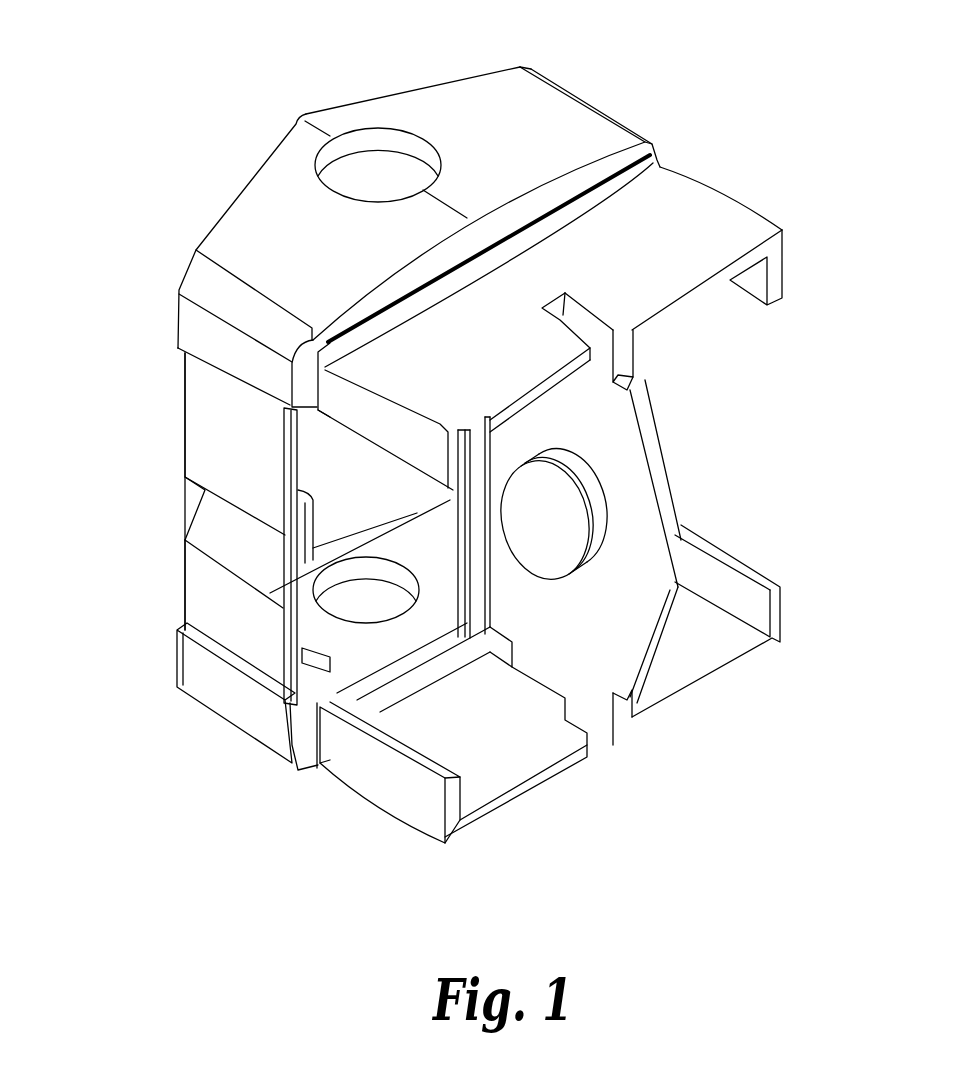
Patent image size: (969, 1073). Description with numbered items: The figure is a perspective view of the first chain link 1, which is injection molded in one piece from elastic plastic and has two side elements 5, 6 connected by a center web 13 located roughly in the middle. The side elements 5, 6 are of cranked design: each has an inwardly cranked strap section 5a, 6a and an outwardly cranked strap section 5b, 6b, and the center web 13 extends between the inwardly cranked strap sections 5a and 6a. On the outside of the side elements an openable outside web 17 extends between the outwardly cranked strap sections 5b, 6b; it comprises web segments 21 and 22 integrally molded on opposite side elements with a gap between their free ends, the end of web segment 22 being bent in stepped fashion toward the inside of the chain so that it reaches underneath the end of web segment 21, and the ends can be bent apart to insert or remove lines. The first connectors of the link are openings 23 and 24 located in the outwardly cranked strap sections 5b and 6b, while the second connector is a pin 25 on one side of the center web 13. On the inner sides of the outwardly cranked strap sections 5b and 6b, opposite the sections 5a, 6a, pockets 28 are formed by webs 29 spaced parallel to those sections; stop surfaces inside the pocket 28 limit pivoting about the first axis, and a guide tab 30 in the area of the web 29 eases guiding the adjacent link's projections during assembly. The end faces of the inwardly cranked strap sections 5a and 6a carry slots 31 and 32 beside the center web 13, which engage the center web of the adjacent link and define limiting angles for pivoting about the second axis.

The chain link 1 is at (765, 177).
The side element 5 is at (660, 167).
The inwardly cranked strap section 5a is at (723, 225).
The outwardly cranked strap section 5b is at (525, 123).
The side element 6 is at (305, 772).
The inwardly cranked strap section 6a is at (397, 822).
The outwardly cranked strap section 6b is at (242, 728).
The center web 13 is at (627, 473).
The openable outside web 17 is at (157, 523).
The web segment 21 is at (217, 448).
The web segment 22 is at (213, 608).
The opening 23 is at (363, 140).
The opening 24 is at (348, 580).
The pin 25 is at (550, 533).
The pocket 28 is at (285, 770).
The web 29 is at (417, 622).
The guide tab 30 is at (313, 678).
The slot 31 is at (573, 320).
The slot 32 is at (603, 745).